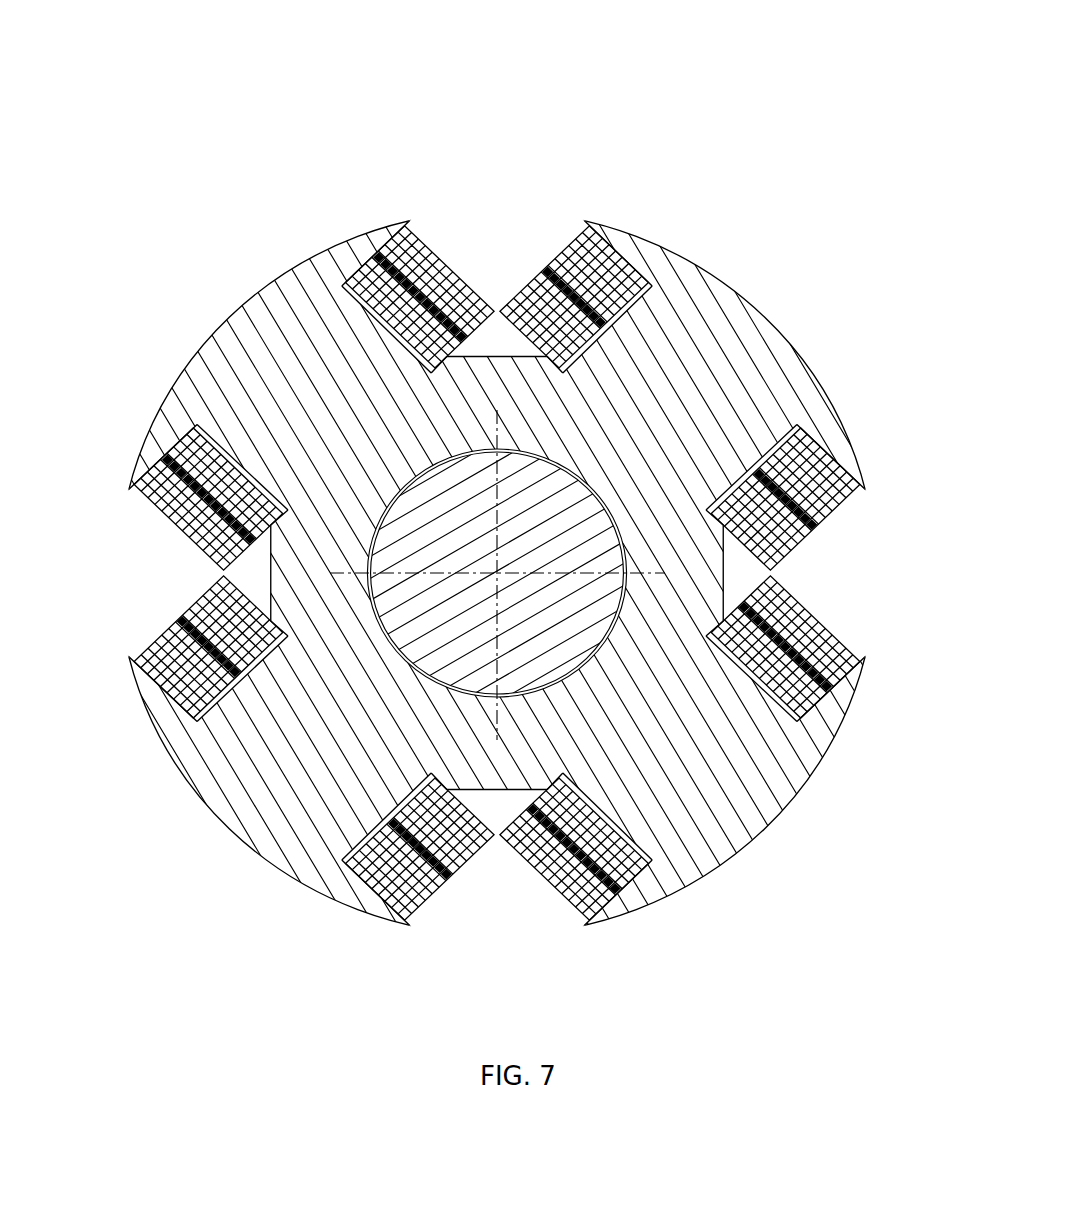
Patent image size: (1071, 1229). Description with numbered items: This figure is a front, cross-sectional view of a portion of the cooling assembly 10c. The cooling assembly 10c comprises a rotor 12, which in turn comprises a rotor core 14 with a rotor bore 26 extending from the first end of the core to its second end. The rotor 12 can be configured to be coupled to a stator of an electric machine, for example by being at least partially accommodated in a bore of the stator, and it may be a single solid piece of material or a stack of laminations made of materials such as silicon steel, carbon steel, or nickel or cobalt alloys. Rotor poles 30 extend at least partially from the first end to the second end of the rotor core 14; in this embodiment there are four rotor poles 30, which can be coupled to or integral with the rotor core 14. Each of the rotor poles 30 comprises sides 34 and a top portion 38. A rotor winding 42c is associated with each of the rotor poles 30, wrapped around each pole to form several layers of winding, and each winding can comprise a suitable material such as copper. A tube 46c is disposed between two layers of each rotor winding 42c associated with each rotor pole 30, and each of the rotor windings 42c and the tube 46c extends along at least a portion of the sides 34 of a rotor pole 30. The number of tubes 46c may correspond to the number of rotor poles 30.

The cooling assembly 10c is at (626, 56).
The rotor 12 is at (212, 235).
The rotor core 14 is at (687, 577).
The rotor bore 26 is at (370, 547).
The rotor poles 30 is at (193, 355).
The sides 34 is at (620, 345).
The top portion 38 is at (850, 488).
The rotor windings 42c is at (552, 268).
The tube 46c is at (400, 272).